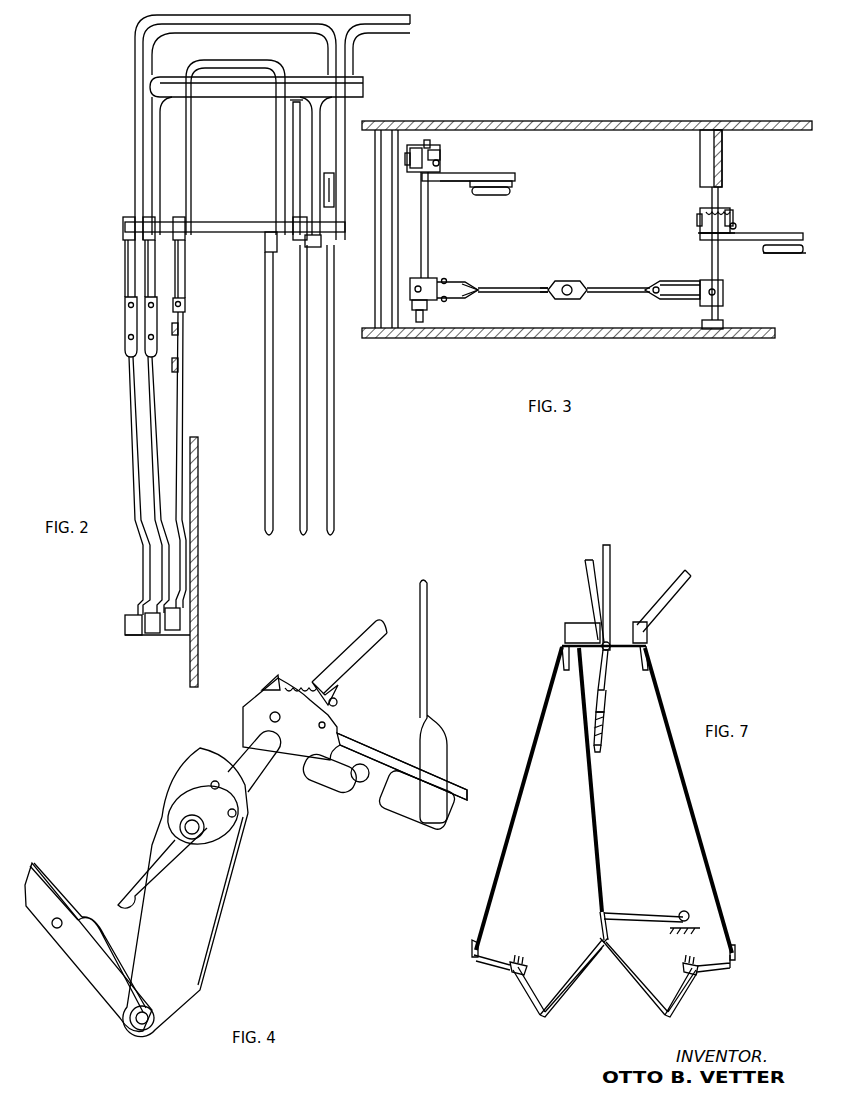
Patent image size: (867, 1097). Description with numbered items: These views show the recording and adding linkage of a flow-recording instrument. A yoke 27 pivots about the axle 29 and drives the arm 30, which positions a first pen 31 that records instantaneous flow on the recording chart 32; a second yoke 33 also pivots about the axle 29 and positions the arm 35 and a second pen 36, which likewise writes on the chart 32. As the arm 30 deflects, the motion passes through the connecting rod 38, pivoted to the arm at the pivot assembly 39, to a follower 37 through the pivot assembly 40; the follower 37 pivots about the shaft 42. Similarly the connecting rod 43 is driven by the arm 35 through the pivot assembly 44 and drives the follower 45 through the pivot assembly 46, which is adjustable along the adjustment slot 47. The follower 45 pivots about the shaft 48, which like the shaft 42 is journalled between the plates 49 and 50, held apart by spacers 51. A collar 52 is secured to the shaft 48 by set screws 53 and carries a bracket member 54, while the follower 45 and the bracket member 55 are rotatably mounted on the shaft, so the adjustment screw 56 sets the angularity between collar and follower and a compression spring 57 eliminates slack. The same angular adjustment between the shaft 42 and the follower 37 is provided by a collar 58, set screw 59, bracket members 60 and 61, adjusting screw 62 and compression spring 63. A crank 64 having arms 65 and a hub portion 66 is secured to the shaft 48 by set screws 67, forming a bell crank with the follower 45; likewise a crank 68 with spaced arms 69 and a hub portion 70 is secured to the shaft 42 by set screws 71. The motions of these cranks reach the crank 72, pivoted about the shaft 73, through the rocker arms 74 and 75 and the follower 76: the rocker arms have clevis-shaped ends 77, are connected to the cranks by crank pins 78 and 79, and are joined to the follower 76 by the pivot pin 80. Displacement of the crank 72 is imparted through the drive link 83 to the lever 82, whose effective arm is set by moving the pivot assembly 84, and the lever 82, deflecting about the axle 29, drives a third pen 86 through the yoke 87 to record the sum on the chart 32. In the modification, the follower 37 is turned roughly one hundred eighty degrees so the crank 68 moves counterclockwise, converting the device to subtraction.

In FIG. 2, the yoke 27 is at (135, 40).
In FIG. 7, the yoke 27 is at (612, 556).
In FIG. 2, the axle 29 is at (216, 222).
In FIG. 7, the axle 29 is at (608, 655).
In FIG. 7, the arm 30 is at (578, 625).
In FIG. 2, the first pen 31 is at (130, 390).
In FIG. 7, the first pen 31 is at (606, 710).
In FIG. 2, the recording chart 32 is at (199, 585).
In FIG. 2, the yoke 33 is at (306, 88).
In FIG. 7, the yoke 33 is at (660, 602).
In FIG. 2, the arm 35 is at (322, 245).
In FIG. 7, the arm 35 is at (647, 633).
In FIG. 2, the second pen 36 is at (153, 447).
In FIG. 7, the second pen 36 is at (604, 738).
In FIG. 3, the follower 37 is at (450, 182).
In FIG. 7, the follower 37 is at (490, 968).
In FIG. 2, the connecting rod 38 is at (334, 395).
In FIG. 3, the connecting rod 38 is at (513, 185).
In FIG. 7, the connecting rod 38 is at (518, 804).
In FIG. 2, the pivot assembly 39 is at (334, 184).
In FIG. 3, the pivot assembly 40 is at (490, 196).
In FIG. 3, the shaft 42 is at (428, 240).
In FIG. 7, the shaft 42 is at (530, 968).
In FIG. 2, the connecting rod 43 is at (300, 449).
In FIG. 3, the connecting rod 43 is at (800, 256).
In FIG. 4, the connecting rod 43 is at (428, 612).
In FIG. 7, the connecting rod 43 is at (690, 804).
In FIG. 2, the pivot assembly 44 is at (297, 222).
In FIG. 3, the follower 45 is at (762, 234).
In FIG. 4, the follower 45 is at (345, 782).
In FIG. 7, the follower 45 is at (710, 972).
In FIG. 3, the pivot assembly 46 is at (770, 253).
In FIG. 4, the pivot assembly 46 is at (412, 810).
In FIG. 4, the adjustment slot 47 is at (322, 770).
In FIG. 3, the shaft 48 is at (712, 200).
In FIG. 4, the shaft 48 is at (362, 632).
In FIG. 7, the shaft 48 is at (680, 968).
In FIG. 3, the plate 49 is at (614, 122).
In FIG. 3, the plate 50 is at (546, 340).
In FIG. 3, the spacer 51 is at (722, 161).
In FIG. 3, the collar 52 is at (700, 212).
In FIG. 4, the collar 52 is at (327, 725).
In FIG. 3, the set screw 53 is at (706, 233).
In FIG. 4, the set screw 53 is at (243, 730).
In FIG. 3, the bracket member 54 is at (733, 217).
In FIG. 4, the bracket member 54 is at (338, 688).
In FIG. 3, the bracket member 55 is at (700, 228).
In FIG. 4, the bracket member 55 is at (262, 689).
In FIG. 3, the adjustment screw 56 is at (736, 225).
In FIG. 4, the adjustment screw 56 is at (337, 702).
In FIG. 3, the compression spring 57 is at (732, 212).
In FIG. 4, the compression spring 57 is at (300, 685).
In FIG. 3, the collar 58 is at (412, 170).
In FIG. 3, the set screw 59 is at (445, 176).
In FIG. 3, the bracket member 60 is at (441, 150).
In FIG. 3, the bracket member 61 is at (408, 165).
In FIG. 3, the adjusting screw 62 is at (440, 161).
In FIG. 3, the compression spring 63 is at (430, 147).
In FIG. 4, the crank 64 is at (195, 918).
In FIG. 7, the crank 64 is at (676, 1003).
In FIG. 3, the arm 65 is at (686, 281).
In FIG. 4, the arm 65 is at (218, 876).
In FIG. 3, the hub portion 66 is at (723, 288).
In FIG. 4, the hub portion 66 is at (195, 790).
In FIG. 3, the set screw 67 is at (723, 293).
In FIG. 4, the set screw 67 is at (215, 780).
In FIG. 3, the crank 68 is at (447, 280).
In FIG. 7, the crank 68 is at (522, 990).
In FIG. 3, the arm 69 is at (447, 277).
In FIG. 3, the hub portion 70 is at (412, 302).
In FIG. 3, the set screw 71 is at (410, 290).
In FIG. 7, the crank 72 is at (640, 913).
In FIG. 7, the shaft 73 is at (690, 912).
In FIG. 3, the rocker arm 74 is at (523, 287).
In FIG. 7, the rocker arm 74 is at (568, 985).
In FIG. 3, the rocker arm 75 is at (608, 287).
In FIG. 4, the rocker arm 75 is at (45, 885).
In FIG. 7, the rocker arm 75 is at (645, 995).
In FIG. 3, the follower 76 is at (570, 300).
In FIG. 7, the follower 76 is at (600, 930).
In FIG. 3, the clevis-shaped end 77 is at (586, 289).
In FIG. 4, the clevis-shaped end 77 is at (100, 985).
In FIG. 3, the crank pin 78 is at (480, 288).
In FIG. 3, the crank pin 79 is at (660, 283).
In FIG. 4, the crank pin 79 is at (138, 1030).
In FIG. 3, the pivot pin 80 is at (566, 281).
In FIG. 7, the lever 82 is at (570, 655).
In FIG. 2, the drive link 83 is at (265, 358).
In FIG. 7, the drive link 83 is at (594, 804).
In FIG. 2, the pivot assembly 84 is at (265, 246).
In FIG. 2, the third pen 86 is at (183, 420).
In FIG. 7, the third pen 86 is at (600, 752).
In FIG. 2, the yoke 87 is at (197, 62).
In FIG. 7, the yoke 87 is at (590, 590).